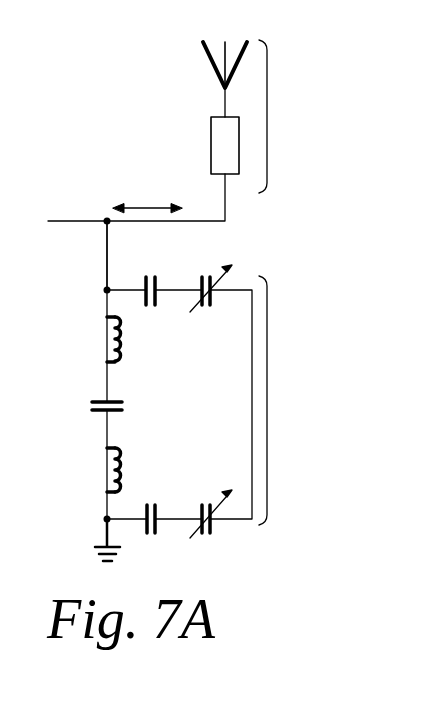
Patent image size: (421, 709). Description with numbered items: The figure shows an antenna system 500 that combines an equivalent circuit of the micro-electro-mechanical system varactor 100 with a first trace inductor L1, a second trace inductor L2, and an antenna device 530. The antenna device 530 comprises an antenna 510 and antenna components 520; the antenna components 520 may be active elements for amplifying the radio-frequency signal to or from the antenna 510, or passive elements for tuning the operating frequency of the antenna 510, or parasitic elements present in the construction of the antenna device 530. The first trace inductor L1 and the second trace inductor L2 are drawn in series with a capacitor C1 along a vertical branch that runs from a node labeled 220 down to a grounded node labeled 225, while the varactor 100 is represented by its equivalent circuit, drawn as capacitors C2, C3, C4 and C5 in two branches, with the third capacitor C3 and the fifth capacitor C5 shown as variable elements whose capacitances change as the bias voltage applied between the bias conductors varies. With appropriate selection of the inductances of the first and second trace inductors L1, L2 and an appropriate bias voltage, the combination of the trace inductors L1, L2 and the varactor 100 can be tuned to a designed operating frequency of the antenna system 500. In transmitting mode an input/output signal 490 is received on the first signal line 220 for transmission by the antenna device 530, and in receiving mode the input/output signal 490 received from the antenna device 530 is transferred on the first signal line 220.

The antenna 510 is at (207, 50).
The antenna components 520 is at (211, 137).
The antenna device 530 is at (284, 116).
The input/output signal 490 is at (152, 205).
The first signal line 220 is at (107, 257).
The second node (ground) 225 is at (105, 540).
The first trace inductor L1 is at (105, 328).
The second trace inductor L2 is at (108, 468).
The first capacitor C1 is at (95, 400).
The second capacitor C2 is at (155, 273).
The third capacitor C3 is at (198, 273).
The fourth capacitor C4 is at (153, 499).
The fifth capacitor C5 is at (197, 499).
The micro-electro-mechanical system varactor 100 is at (285, 400).
The antenna system 500 is at (315, 568).